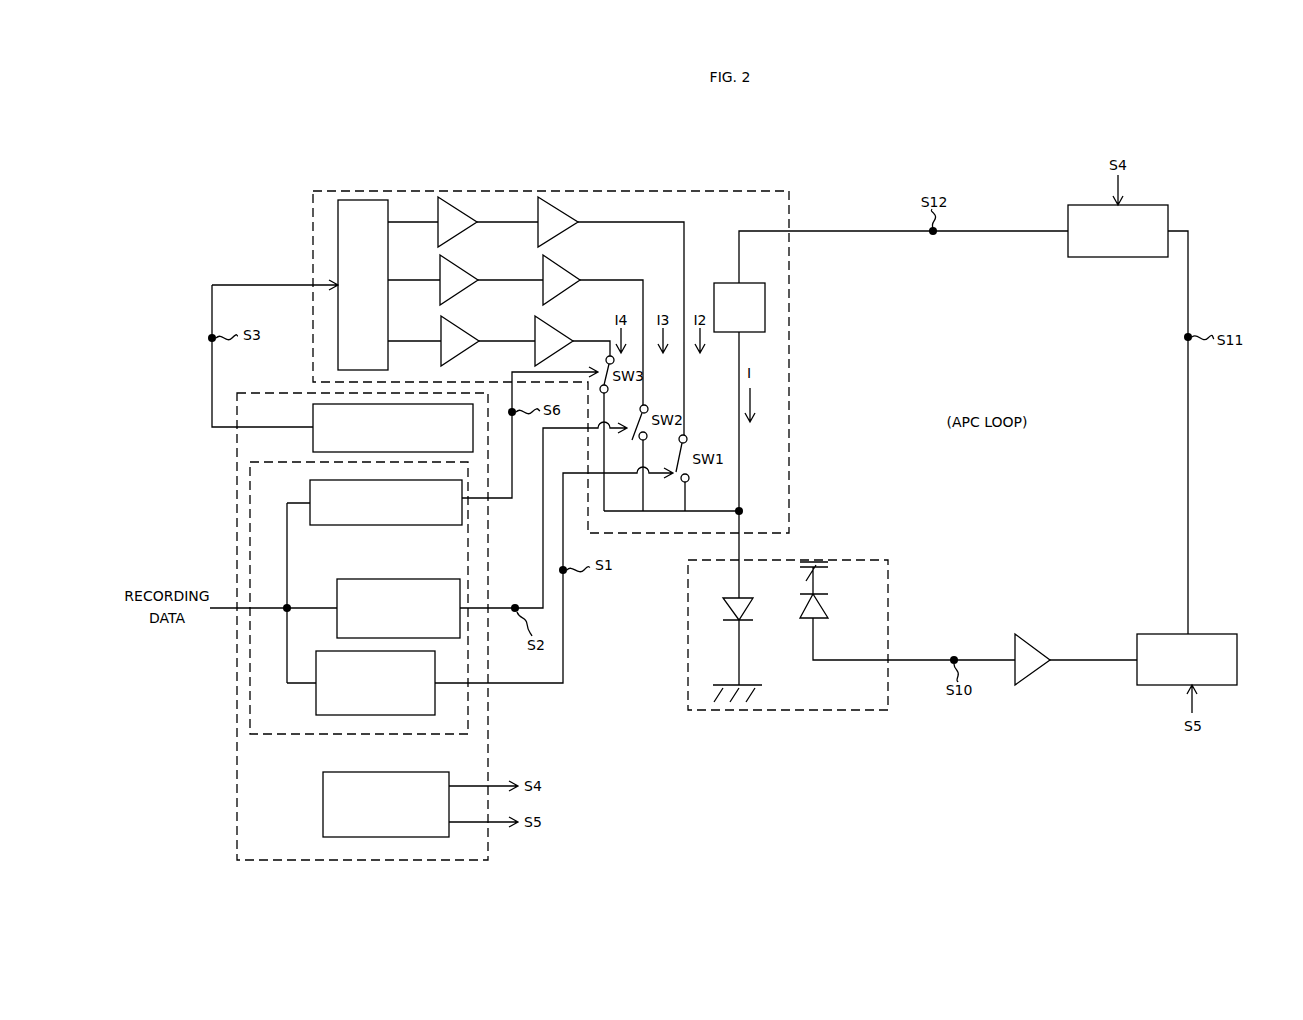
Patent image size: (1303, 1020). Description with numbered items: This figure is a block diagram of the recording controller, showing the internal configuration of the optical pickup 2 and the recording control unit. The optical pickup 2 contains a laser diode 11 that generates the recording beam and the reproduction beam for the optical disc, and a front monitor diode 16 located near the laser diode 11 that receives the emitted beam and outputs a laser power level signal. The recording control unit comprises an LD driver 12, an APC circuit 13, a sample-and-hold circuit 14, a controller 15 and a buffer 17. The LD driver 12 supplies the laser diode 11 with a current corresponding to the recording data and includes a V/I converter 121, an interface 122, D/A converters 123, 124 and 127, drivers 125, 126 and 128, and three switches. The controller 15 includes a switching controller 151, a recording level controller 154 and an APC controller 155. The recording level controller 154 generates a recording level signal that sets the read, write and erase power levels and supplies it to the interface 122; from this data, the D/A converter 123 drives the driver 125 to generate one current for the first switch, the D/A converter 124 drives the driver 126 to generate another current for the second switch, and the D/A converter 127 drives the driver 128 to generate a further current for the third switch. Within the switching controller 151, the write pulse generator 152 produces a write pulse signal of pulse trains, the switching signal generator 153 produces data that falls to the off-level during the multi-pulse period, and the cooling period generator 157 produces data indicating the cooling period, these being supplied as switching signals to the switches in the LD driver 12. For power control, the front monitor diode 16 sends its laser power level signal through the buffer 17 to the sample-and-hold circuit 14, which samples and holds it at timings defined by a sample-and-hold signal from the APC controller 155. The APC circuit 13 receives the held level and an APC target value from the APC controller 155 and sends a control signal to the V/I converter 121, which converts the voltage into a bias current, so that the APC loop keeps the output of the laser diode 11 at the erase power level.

The optical pickup 2 is at (778, 710).
The laser diode 11 is at (724, 606).
The LD driver 12 is at (782, 191).
The APC circuit 13 is at (1168, 208).
The sample-and-hold circuit 14 is at (1237, 655).
The controller 15 is at (237, 756).
The front monitor diode 16 is at (809, 626).
The buffer 17 is at (1034, 672).
The V/I converter 121 is at (752, 332).
The interface 122 is at (337, 220).
The D/A converter 123 is at (455, 212).
The D/A converter 124 is at (462, 272).
The driver 125 is at (552, 216).
The driver 126 is at (560, 272).
The D/A converter 127 is at (460, 334).
The driver 128 is at (553, 334).
The switching controller 151 is at (285, 735).
The write pulse generator 152 is at (337, 598).
The switching signal generator 153 is at (435, 663).
The recording level controller 154 is at (313, 434).
The APC controller 155 is at (415, 772).
The cooling period generator 157 is at (310, 490).